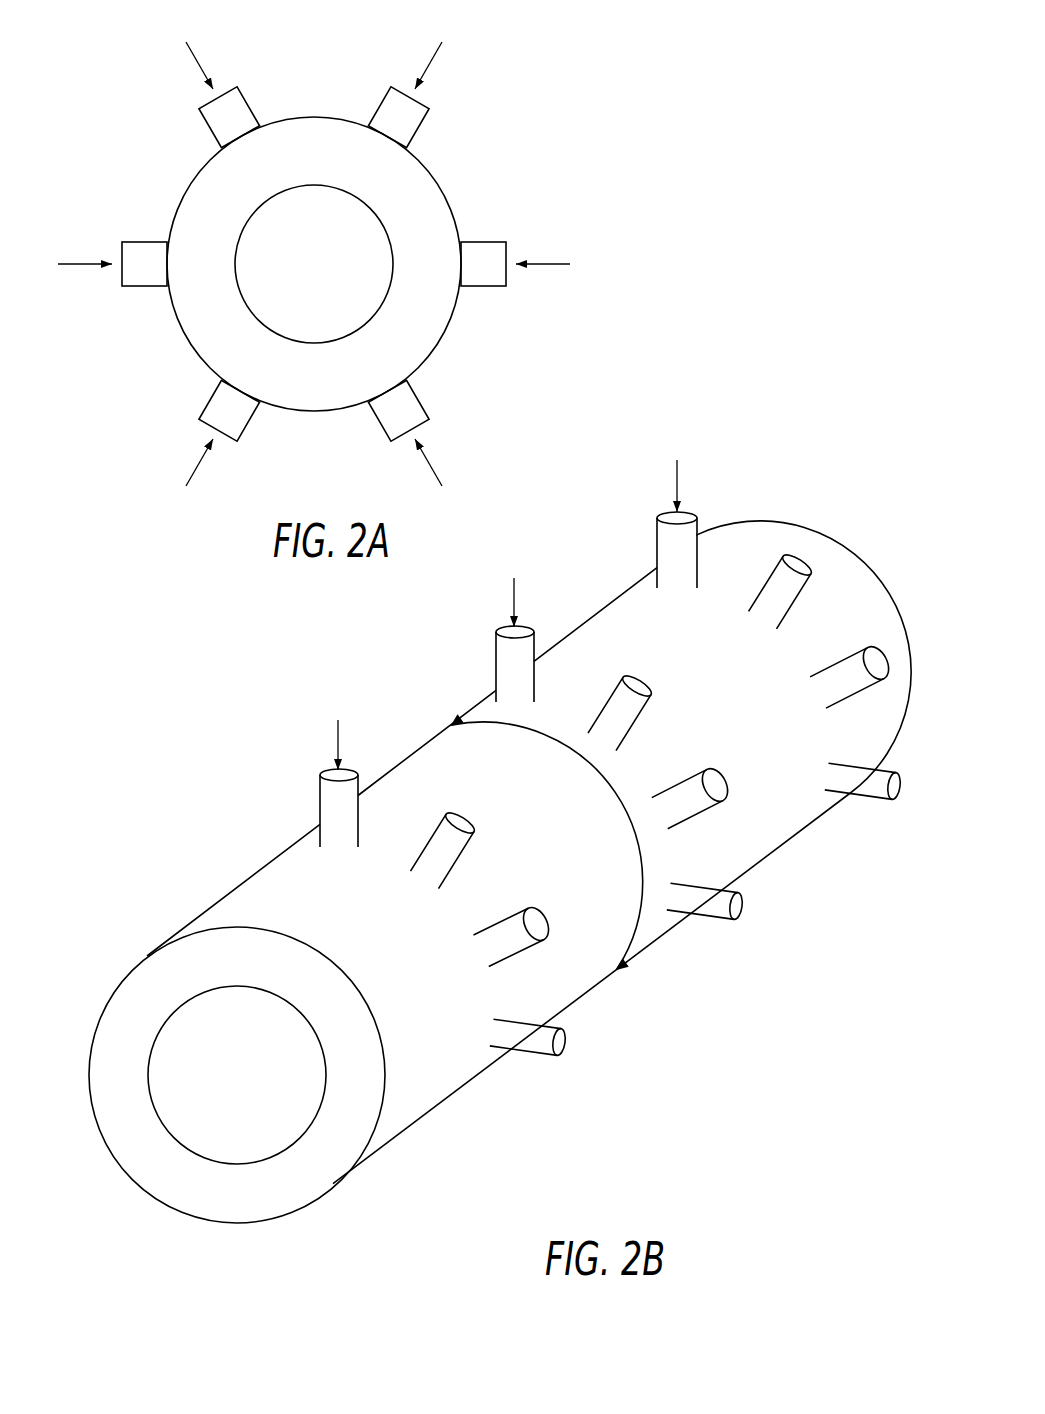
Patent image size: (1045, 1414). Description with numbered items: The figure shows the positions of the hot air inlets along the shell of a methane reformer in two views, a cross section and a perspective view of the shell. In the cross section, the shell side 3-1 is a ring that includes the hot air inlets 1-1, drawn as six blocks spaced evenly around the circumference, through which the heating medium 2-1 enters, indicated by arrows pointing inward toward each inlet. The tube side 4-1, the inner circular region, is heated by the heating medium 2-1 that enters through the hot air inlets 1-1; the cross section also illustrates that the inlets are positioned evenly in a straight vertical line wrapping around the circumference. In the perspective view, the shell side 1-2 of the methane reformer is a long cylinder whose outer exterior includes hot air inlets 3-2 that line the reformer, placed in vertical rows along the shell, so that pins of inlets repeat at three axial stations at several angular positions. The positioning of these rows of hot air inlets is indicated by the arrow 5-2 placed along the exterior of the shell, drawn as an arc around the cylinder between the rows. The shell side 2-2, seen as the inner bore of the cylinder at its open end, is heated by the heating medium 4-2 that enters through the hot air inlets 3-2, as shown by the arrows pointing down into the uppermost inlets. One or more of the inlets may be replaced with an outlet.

In FIG. 2A, the hot air inlets 1-1 is at (377, 107).
In FIG. 2A, the heating medium 2-1 is at (437, 62).
In FIG. 2A, the shell side 3-1 is at (445, 193).
In FIG. 2A, the tube side 4-1 is at (383, 302).
In FIG. 2B, the shell side 1-2 is at (386, 1143).
In FIG. 2B, the shell side 2-2 is at (198, 1153).
In FIG. 2B, the hot air inlets 3-2 is at (528, 1042).
In FIG. 2B, the heating medium 4-2 is at (338, 738).
In FIG. 2B, the arrow 5-2 is at (631, 930).